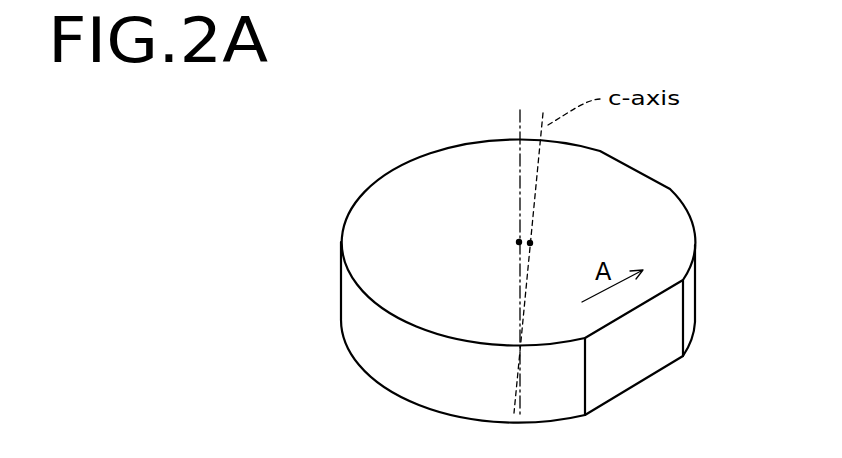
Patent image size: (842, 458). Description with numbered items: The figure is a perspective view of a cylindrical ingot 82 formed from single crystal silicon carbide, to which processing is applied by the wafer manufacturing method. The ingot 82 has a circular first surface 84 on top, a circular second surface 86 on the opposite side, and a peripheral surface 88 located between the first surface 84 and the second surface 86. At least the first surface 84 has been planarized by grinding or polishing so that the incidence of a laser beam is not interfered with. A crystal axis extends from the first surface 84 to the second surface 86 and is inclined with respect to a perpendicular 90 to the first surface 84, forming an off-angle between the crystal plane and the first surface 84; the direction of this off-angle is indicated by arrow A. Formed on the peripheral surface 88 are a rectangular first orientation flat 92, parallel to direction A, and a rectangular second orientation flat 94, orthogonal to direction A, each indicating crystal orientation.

The ingot 82 is at (396, 163).
The first surface 84 is at (378, 223).
The second surface 86 is at (418, 402).
The peripheral surface 88 is at (370, 324).
The perpendicular 90 is at (519, 125).
The first orientation flat 92 is at (650, 350).
The second orientation flat 94 is at (663, 183).